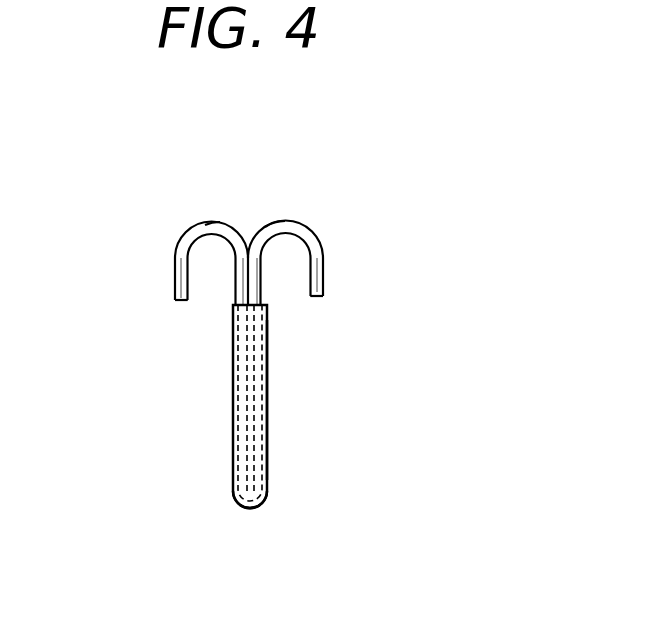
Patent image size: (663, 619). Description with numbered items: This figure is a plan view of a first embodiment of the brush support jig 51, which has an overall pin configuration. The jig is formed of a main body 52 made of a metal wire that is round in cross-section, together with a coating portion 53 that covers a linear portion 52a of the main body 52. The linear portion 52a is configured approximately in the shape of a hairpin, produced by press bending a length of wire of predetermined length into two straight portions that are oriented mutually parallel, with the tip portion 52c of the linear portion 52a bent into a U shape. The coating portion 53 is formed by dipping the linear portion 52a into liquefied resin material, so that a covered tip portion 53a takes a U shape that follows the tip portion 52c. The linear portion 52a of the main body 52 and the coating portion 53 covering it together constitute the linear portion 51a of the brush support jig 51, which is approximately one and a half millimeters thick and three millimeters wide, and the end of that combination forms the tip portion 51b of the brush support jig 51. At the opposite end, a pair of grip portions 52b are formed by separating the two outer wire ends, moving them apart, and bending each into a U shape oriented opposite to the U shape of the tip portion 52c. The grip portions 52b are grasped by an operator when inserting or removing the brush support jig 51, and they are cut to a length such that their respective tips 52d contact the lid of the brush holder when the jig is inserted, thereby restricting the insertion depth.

The brush support jig 51 is at (238, 340).
The linear portion of the brush support jig 51a is at (283, 404).
The tip portion of the brush support jig 51b is at (259, 514).
The main body 52 is at (258, 283).
The linear portion of the main body 52a is at (233, 370).
The grip portions 52b is at (265, 227).
The tip portion of the linear portion 52c is at (237, 500).
The tips of the grip portions 52d is at (176, 301).
The coating portion 53 is at (233, 415).
The covered tip portion 53a is at (245, 504).